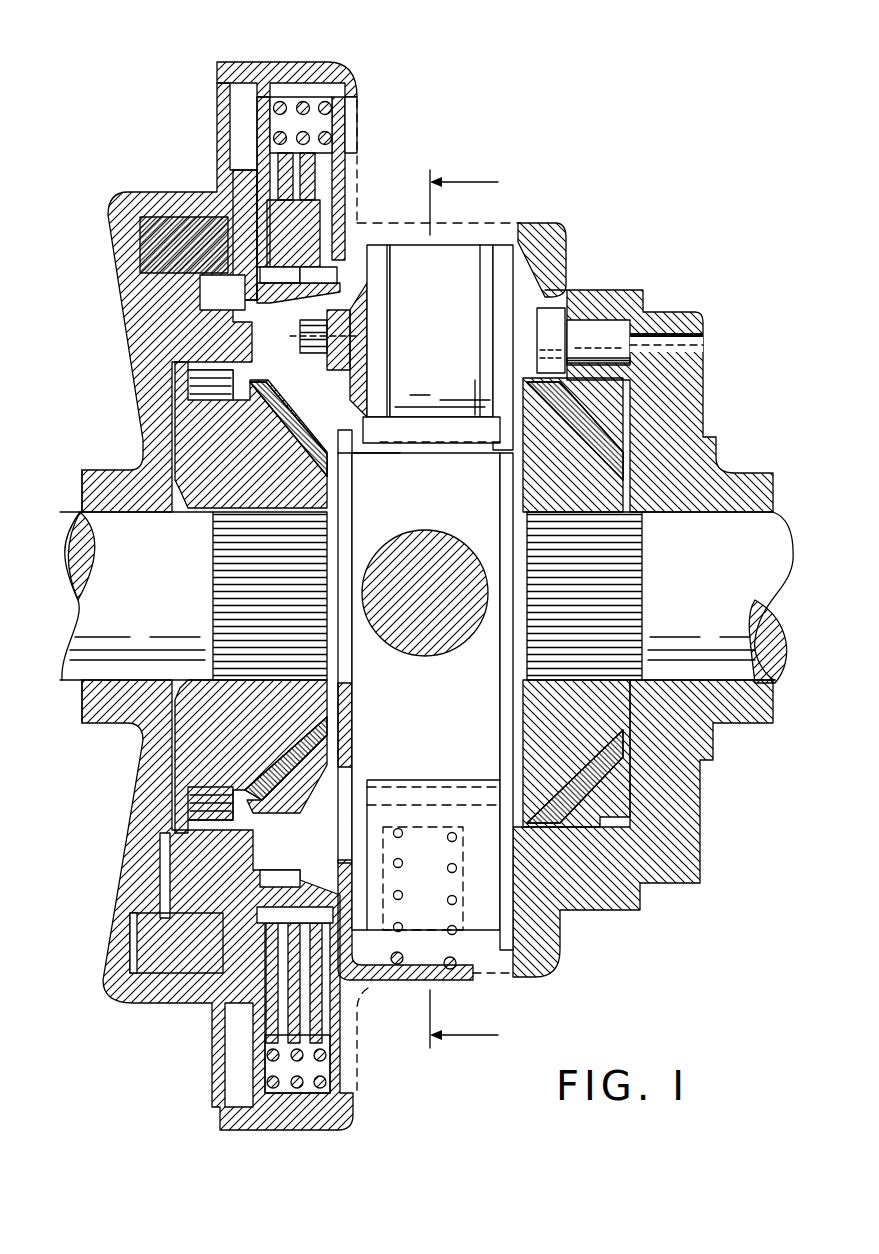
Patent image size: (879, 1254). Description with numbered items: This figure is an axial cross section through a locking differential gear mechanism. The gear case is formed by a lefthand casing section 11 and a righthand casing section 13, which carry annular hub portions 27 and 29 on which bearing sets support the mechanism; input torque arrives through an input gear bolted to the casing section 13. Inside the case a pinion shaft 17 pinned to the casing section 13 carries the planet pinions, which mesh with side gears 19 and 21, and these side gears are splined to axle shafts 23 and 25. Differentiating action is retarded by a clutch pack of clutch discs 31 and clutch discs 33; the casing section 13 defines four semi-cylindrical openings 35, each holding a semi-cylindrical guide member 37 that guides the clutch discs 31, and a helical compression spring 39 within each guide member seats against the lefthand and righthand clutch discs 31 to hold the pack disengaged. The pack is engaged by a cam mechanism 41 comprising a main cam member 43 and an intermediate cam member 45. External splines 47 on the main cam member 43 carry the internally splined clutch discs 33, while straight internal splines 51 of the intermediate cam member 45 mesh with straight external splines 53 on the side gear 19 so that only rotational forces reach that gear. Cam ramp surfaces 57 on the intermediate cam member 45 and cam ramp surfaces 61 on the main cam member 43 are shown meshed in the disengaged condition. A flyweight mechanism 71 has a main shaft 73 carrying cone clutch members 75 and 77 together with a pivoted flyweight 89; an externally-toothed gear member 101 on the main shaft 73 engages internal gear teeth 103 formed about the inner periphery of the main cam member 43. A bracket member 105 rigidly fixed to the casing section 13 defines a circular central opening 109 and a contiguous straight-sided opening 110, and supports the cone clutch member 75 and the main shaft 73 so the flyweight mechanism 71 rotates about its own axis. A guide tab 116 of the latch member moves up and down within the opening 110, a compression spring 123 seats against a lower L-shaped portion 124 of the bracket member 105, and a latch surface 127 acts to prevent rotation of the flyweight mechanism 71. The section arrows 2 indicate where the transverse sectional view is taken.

The lefthand casing section 11 is at (124, 192).
The righthand casing section 13 is at (543, 245).
The pinion shaft 17 is at (430, 545).
The side gear 19 is at (203, 430).
The side gear 21 is at (608, 430).
The axle shaft 23 is at (193, 596).
The axle shaft 25 is at (660, 597).
The annular hub portion 27 is at (100, 480).
The annular hub portion 29 is at (750, 492).
The clutch discs 31 is at (262, 120).
The clutch discs 33 is at (332, 228).
The semi-cylindrical openings 35 is at (287, 97).
The semi-cylindrical guide member 37 is at (356, 100).
The helical compression spring 39 is at (322, 66).
The cam mechanism 41 is at (188, 249).
The main cam member 43 is at (247, 193).
The intermediate cam member 45 is at (143, 322).
The external splines 47 is at (328, 276).
The straight internal splines 51 is at (235, 805).
The straight external splines 53 is at (213, 385).
The cam ramp surfaces 57 is at (222, 292).
The cam ramp surfaces 61 is at (178, 975).
The flyweight mechanism 71 is at (490, 238).
The main shaft 73 is at (598, 328).
The cone clutch member 75 is at (340, 322).
The cone clutch member 77 is at (550, 320).
The flyweight 89 is at (480, 378).
The externally-toothed gear member 101 is at (330, 333).
The internal gear teeth 103 is at (280, 882).
The bracket member 105 is at (352, 723).
The circular central opening 109 is at (350, 672).
The straight-sided opening 110 is at (343, 470).
The guide tab 116 is at (345, 460).
The compression spring 123 is at (408, 975).
The L-shaped portion 124 is at (452, 975).
The latch surface 127 is at (418, 443).
The section line 2- 2 is at (471, 608).